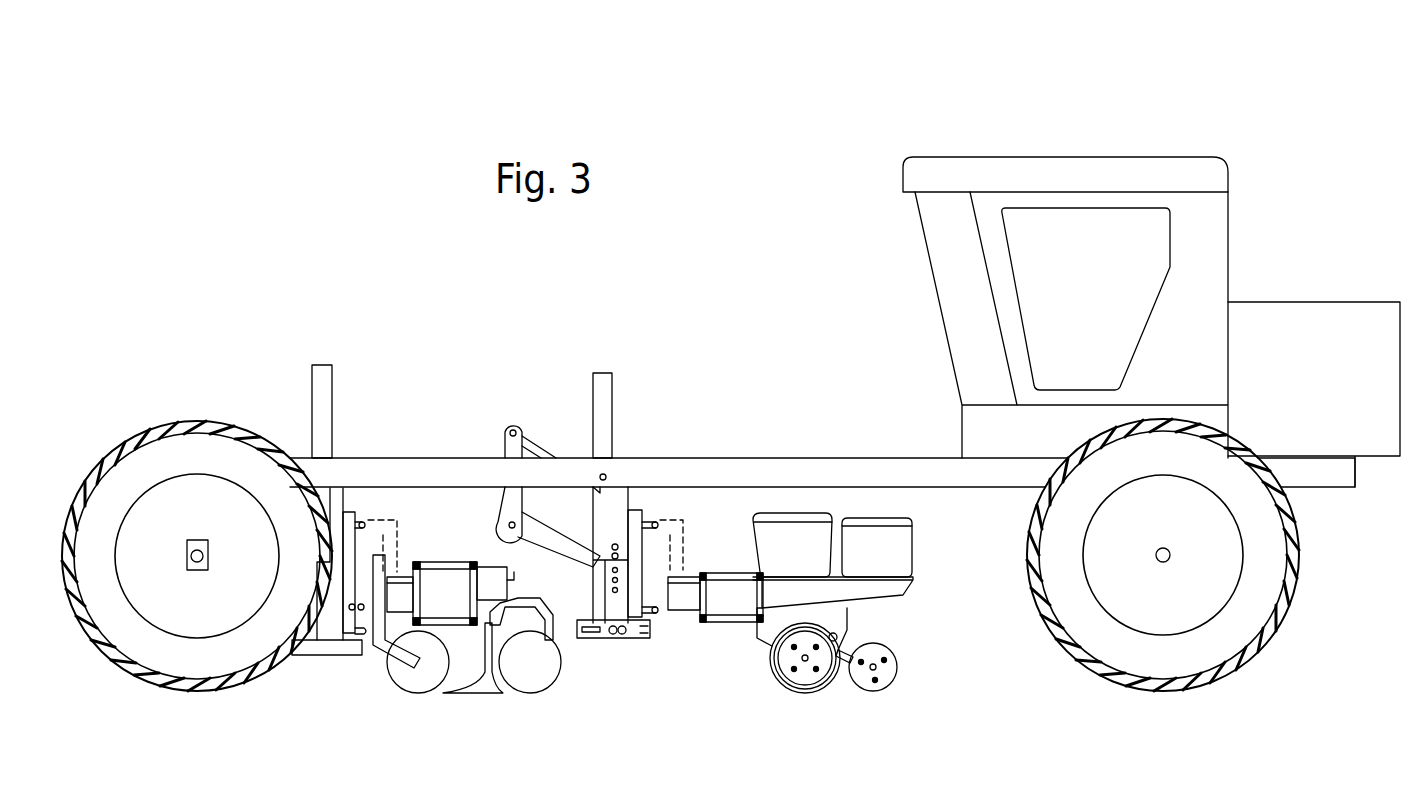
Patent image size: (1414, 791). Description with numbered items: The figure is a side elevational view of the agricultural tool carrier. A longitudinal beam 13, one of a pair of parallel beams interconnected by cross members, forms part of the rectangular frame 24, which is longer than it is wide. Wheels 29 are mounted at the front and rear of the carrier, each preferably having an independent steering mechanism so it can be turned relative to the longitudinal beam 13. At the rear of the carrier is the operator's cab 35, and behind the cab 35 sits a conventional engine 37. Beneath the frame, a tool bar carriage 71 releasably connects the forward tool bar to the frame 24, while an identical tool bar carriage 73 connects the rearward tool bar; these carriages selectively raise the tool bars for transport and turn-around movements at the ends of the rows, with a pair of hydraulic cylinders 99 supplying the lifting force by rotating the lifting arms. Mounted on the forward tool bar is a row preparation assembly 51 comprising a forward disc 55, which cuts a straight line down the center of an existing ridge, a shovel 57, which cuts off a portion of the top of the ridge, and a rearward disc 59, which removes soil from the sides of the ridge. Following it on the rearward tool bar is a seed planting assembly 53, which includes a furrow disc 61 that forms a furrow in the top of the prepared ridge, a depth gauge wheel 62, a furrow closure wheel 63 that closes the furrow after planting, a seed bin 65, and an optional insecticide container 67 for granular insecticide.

The longitudinal beam 13 is at (798, 470).
The rectangular frame 24 is at (473, 454).
The wheel 29 is at (163, 420).
The cab 35 is at (1077, 172).
The engine 37 is at (1269, 336).
The row preparation assembly 51 is at (447, 561).
The seed planting assembly 53 is at (837, 598).
The forward disc 55 is at (412, 678).
The shovel 57 is at (480, 695).
The rearward disc 59 is at (531, 676).
The furrow disc 61 is at (768, 663).
The depth gauge wheel 62 is at (807, 675).
The furrow closure wheel 63 is at (870, 685).
The seed bin 65 is at (777, 540).
The insecticide container 67 is at (900, 557).
The tool bar carriage 71 is at (362, 513).
The tool bar carriage 73 is at (654, 506).
The hydraulic cylinder 99 is at (333, 378).